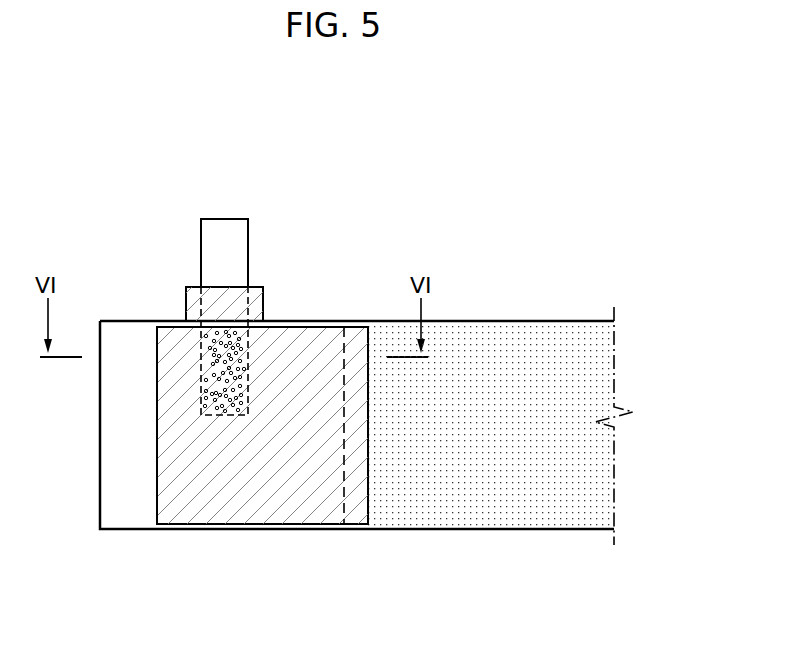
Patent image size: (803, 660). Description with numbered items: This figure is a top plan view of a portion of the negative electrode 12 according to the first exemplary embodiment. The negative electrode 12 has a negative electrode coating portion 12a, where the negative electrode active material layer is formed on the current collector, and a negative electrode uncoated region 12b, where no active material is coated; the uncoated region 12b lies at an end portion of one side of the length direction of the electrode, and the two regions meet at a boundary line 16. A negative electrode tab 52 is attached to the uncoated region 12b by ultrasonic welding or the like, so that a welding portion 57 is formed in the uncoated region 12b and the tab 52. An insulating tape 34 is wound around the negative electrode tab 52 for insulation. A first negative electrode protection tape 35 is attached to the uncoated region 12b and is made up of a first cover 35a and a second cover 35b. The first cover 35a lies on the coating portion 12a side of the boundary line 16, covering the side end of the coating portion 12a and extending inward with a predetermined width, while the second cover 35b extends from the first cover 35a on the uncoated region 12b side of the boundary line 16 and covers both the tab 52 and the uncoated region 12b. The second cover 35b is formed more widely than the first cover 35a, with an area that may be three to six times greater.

The negative electrode 12 is at (522, 300).
The negative electrode coating portion 12a is at (508, 517).
The negative electrode uncoated region 12b is at (127, 520).
The boundary line 16 is at (338, 355).
The insulating tape 34 is at (255, 297).
The first negative electrode protection tape 35 is at (385, 607).
The first cover 35a is at (358, 512).
The second cover 35b is at (303, 512).
The negative electrode tab 52 is at (230, 225).
The welding portion 57 is at (228, 415).